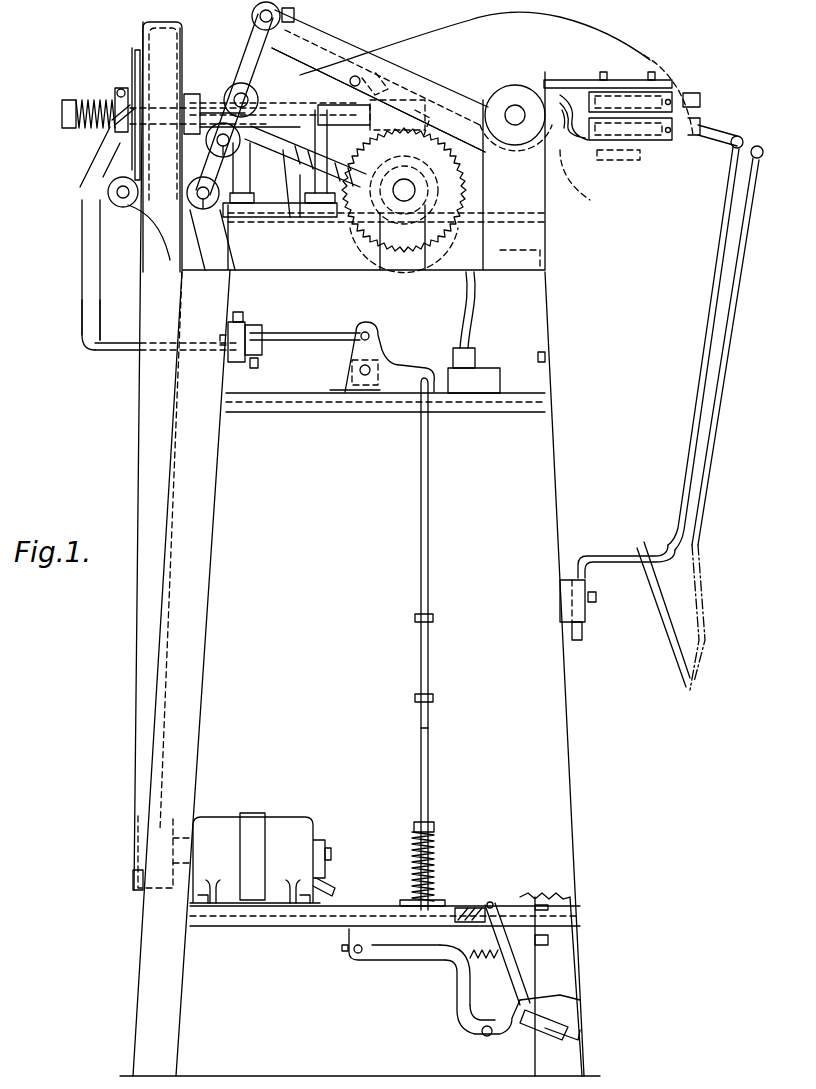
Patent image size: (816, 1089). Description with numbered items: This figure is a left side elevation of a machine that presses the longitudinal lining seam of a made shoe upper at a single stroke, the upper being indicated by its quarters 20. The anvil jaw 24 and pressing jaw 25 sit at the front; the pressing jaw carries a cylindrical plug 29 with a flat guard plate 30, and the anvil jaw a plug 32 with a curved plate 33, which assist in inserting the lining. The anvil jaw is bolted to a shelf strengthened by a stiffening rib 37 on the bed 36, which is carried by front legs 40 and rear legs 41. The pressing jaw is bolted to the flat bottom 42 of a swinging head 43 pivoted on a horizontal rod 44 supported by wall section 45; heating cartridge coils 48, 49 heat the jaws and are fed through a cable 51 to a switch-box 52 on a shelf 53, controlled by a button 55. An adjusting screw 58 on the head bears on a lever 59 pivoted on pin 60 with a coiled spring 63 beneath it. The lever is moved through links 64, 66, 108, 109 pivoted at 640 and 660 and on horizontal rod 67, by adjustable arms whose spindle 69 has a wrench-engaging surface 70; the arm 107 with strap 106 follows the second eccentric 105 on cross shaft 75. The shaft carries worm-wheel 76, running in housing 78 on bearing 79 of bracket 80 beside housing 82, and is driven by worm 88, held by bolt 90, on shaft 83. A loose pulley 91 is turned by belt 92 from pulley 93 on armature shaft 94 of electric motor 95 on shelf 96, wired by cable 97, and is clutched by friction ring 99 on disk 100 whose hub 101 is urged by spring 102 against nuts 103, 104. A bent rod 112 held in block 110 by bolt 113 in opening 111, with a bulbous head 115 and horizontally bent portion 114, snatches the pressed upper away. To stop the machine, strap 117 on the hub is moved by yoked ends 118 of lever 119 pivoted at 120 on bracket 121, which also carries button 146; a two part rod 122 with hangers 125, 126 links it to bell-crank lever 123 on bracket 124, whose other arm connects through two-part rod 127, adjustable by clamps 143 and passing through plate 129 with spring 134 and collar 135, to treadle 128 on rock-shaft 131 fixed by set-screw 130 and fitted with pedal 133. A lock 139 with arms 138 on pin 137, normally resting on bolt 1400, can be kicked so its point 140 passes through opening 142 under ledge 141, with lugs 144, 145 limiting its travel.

The quarters 20 is at (695, 145).
The anvil jaw 24 is at (646, 135).
The pressing jaw 25 is at (680, 78).
The cylindrical plug 29 is at (692, 92).
The flat guard plate 30 is at (698, 108).
The cylindrical plug 32 is at (688, 130).
The curved plate 33 is at (712, 132).
The bed 36 is at (590, 287).
The stiffening rib 37 is at (590, 218).
The front legs 40 is at (595, 925).
The rear legs 41 is at (195, 688).
The flat bottom 42 is at (620, 88).
The swinging head 43 is at (590, 48).
The horizontal rod 44 is at (515, 115).
The wall section 45 is at (514, 191).
The heating cartridge coil 48 is at (600, 100).
The heating cartridge coil 49 is at (622, 125).
The cable 51 is at (462, 305).
The switch-box 52 is at (475, 390).
The shelf 53 is at (450, 412).
The button 55 is at (545, 357).
The adjusting screw 58 is at (296, 20).
The lever 59 is at (312, 58).
The horizontal pin 60 is at (358, 78).
The coiled spring 63 is at (400, 65).
The link 64 is at (308, 68).
The link 66 is at (228, 210).
The horizontal rod 67 is at (196, 193).
The spindle 69 is at (306, 105).
The wrench-engaging surface 70 is at (300, 205).
The cross shaft 75 is at (412, 190).
The worm-wheel 76 is at (455, 165).
The housing 78 is at (430, 145).
The bearing 79 is at (322, 105).
The bracket 80 is at (305, 171).
The housing 82 is at (275, 113).
The shaft 83 is at (193, 94).
The worm 88 is at (405, 100).
The bolt 90 is at (432, 110).
The loose pulley 91 is at (183, 40).
The belt 92 is at (139, 688).
The pulley 93 is at (135, 860).
The armature shaft 94 is at (198, 840).
The electric motor 95 is at (258, 822).
The shelf 96 is at (240, 926).
The cable 97 is at (335, 890).
The friction ring 99 is at (138, 55).
The disk 100 is at (133, 62).
The hub 101 is at (110, 100).
The spring 102 is at (95, 105).
The adjusting and locking nut 103 is at (66, 100).
The adjusting and locking nut 104 is at (62, 112).
The second eccentric 105 is at (405, 170).
The strap 106 is at (385, 162).
The arm 107 is at (280, 200).
The link 108 is at (260, 172).
The link 109 is at (245, 62).
The block 110 is at (585, 618).
The cylindrical opening 111 is at (585, 610).
The bent rod 112 is at (706, 300).
The bolt 113 is at (596, 596).
The horizontally bent portion 114 is at (592, 558).
The bulbous head 115 is at (742, 138).
The strap 117 is at (118, 92).
The yoked ends 118 is at (105, 133).
The lever 119 is at (82, 310).
The pivot 120 is at (108, 190).
The bracket 121 is at (118, 220).
The two part rod 122 is at (345, 318).
The bell-crank lever 123 is at (395, 365).
The bracket 124 is at (345, 378).
The hanger 125 is at (250, 322).
The hanger 126 is at (258, 360).
The two-part rod 127 is at (420, 572).
The treadle 128 is at (470, 1008).
The plate 129 is at (438, 900).
The set-screw 130 is at (342, 948).
The rock-shaft 131 is at (355, 955).
The pedal 133 is at (560, 1025).
The spring 134 is at (428, 855).
The collar 135 is at (428, 822).
The horizontal pin 137 is at (490, 1036).
The arms 138 is at (478, 1040).
The lock 139 is at (520, 978).
The point 140 is at (490, 900).
The ledge 141 is at (480, 925).
The opening 142 is at (515, 905).
The clamps 143 is at (433, 618).
The lug 144 is at (470, 955).
The lug 145 is at (468, 980).
The adjustable button 146 is at (150, 230).
The pivot 640 is at (234, 100).
The pivot 660 is at (216, 140).
The bolt 1400 is at (540, 1005).